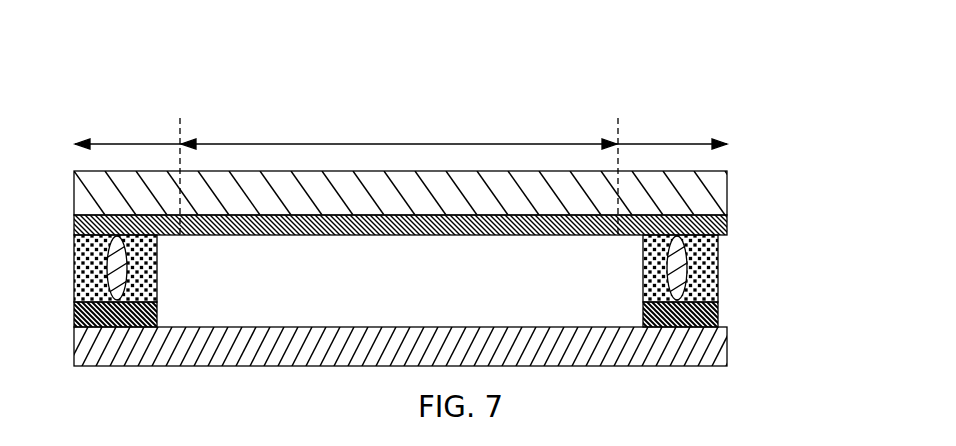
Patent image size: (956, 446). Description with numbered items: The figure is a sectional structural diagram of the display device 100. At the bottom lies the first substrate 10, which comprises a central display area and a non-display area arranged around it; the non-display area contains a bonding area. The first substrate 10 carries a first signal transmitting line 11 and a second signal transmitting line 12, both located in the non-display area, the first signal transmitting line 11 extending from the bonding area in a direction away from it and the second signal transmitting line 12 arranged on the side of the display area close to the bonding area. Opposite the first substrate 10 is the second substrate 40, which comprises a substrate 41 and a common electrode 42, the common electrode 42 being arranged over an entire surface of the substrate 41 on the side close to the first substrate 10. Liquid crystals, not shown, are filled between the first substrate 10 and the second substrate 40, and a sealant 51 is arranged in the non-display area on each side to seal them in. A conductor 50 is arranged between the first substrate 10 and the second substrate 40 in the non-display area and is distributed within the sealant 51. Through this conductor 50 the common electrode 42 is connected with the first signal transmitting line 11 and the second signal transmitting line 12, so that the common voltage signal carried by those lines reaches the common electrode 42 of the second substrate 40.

The display device 100 is at (130, 83).
The second substrate 40 is at (449, 204).
The substrate 41 is at (727, 181).
The common electrode 42 is at (727, 230).
The conductor 50 is at (677, 260).
The sealant 51 is at (716, 283).
The first signal transmitting line 11 is at (459, 314).
The second signal transmitting line 12 is at (716, 316).
The first substrate 10 is at (720, 347).